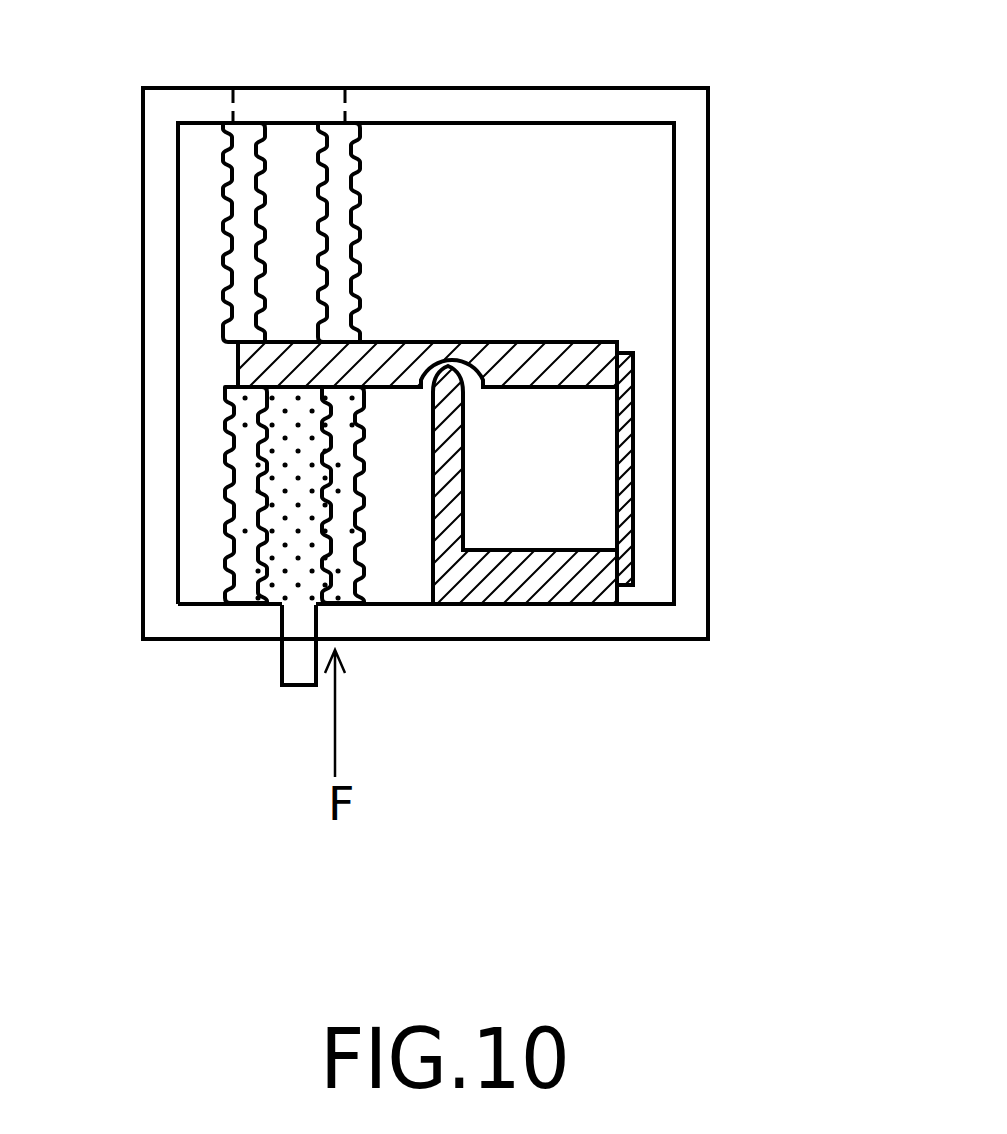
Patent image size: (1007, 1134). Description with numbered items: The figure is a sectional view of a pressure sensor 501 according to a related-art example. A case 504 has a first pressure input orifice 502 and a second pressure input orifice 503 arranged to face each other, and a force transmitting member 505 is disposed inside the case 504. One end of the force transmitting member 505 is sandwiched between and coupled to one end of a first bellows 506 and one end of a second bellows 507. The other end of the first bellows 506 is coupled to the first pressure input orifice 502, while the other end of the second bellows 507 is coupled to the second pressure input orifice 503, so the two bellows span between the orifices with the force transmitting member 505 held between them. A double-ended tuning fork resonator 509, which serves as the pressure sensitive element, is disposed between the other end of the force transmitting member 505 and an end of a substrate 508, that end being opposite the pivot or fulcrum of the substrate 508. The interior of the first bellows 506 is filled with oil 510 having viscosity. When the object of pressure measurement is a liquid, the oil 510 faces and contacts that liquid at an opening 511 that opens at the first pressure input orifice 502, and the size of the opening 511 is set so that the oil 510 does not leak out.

The pressure sensor 501 is at (733, 630).
The first pressure input orifice 502 is at (281, 662).
The second pressure input orifice 503 is at (287, 103).
The case 504 is at (580, 620).
The force transmitting member 505 is at (585, 342).
The first bellows 506 is at (232, 562).
The second bellows 507 is at (362, 160).
The substrate 508 is at (488, 585).
The double-ended tuning fork resonator 509 is at (634, 473).
The oil 510 is at (300, 493).
The opening 511 is at (295, 688).